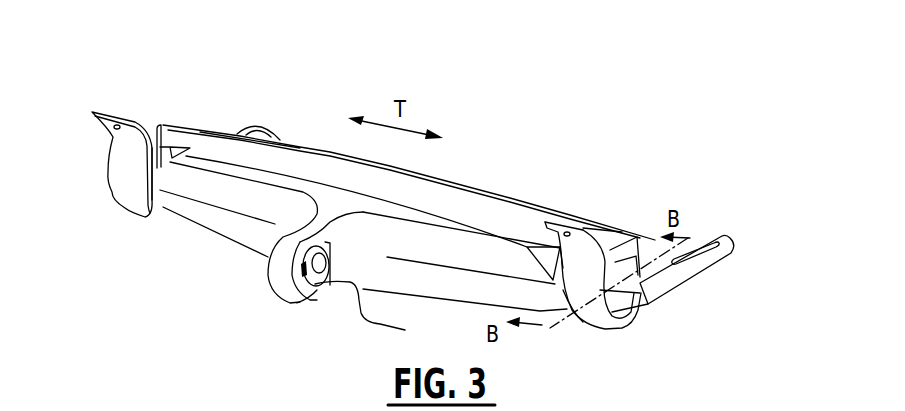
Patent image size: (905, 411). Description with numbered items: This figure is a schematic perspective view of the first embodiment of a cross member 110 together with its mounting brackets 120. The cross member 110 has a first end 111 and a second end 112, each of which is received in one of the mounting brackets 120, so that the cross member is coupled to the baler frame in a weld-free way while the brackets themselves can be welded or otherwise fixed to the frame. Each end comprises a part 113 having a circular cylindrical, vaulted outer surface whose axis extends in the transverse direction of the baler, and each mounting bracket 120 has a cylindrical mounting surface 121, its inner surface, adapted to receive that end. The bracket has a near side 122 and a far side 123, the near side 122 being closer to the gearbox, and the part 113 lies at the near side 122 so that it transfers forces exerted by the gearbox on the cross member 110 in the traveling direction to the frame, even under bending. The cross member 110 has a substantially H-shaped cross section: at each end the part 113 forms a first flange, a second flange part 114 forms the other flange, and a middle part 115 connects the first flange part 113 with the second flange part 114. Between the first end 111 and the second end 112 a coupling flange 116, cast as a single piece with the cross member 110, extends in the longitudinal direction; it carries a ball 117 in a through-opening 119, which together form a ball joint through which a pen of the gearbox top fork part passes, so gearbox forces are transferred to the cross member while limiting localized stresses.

The cross member 110 is at (478, 130).
The first end 111 is at (619, 170).
The second end 112 is at (198, 106).
The part 113 is at (159, 205).
The second flange part 114 is at (647, 240).
The middle part 115 is at (617, 253).
The coupling flange 116 is at (328, 293).
The ball 117 is at (277, 305).
The through-opening 119 is at (302, 254).
The mounting bracket 120 is at (136, 96).
The cylindrical mounting surface 121 is at (163, 133).
The near side 122 is at (550, 293).
The far side 123 is at (648, 305).